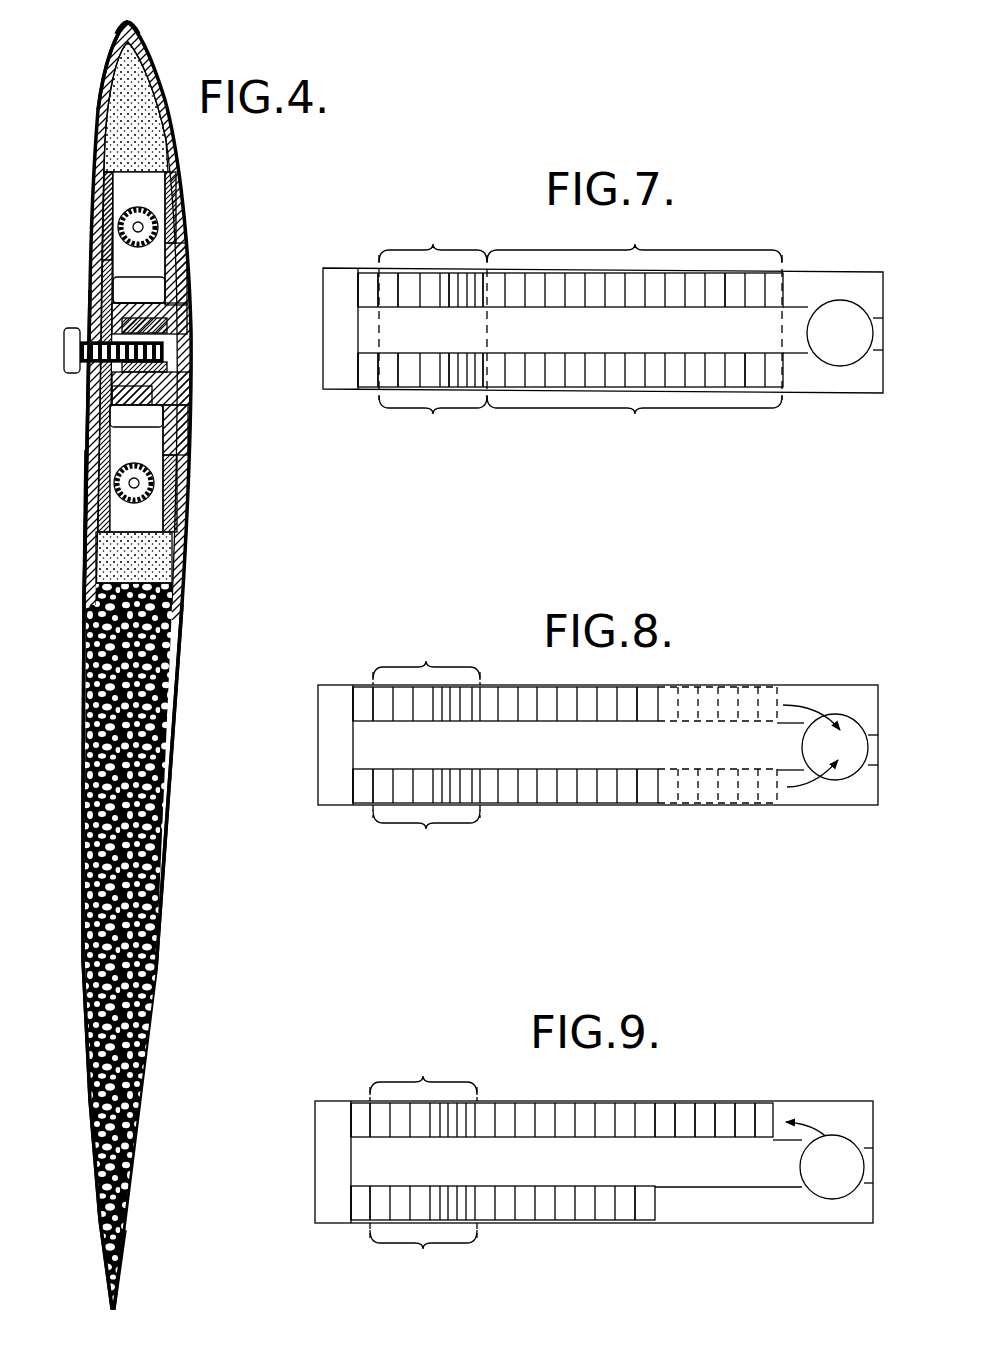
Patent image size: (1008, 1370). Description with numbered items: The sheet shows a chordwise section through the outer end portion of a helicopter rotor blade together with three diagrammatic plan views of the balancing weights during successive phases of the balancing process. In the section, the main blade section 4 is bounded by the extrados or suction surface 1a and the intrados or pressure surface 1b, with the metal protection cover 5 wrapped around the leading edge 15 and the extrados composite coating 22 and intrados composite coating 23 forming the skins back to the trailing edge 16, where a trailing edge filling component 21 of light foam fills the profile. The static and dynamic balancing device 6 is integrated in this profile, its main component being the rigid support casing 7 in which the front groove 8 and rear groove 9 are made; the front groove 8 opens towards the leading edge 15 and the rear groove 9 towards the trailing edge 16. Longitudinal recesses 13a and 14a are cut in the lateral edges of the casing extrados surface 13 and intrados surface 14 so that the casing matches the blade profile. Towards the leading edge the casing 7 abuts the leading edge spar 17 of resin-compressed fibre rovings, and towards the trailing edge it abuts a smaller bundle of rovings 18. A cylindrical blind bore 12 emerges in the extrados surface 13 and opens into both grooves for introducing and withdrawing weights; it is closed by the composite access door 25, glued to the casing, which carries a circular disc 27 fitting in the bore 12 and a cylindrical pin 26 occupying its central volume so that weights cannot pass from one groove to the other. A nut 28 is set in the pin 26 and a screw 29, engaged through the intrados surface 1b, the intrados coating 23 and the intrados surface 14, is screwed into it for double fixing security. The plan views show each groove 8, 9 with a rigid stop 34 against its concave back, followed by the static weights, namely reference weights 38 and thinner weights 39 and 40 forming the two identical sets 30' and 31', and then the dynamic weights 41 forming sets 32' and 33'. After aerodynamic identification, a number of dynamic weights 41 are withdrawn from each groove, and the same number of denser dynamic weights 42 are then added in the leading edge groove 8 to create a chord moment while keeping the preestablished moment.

In FIG. 4, the extrados or suction surface 1a is at (174, 770).
In FIG. 4, the intrados or pressure surface 1b is at (81, 888).
In FIG. 4, the main blade section 4 is at (158, 993).
In FIG. 4, the metal protection cover 5 is at (138, 35).
In FIG. 4, the static and dynamic balancing device 6 is at (192, 417).
In FIG. 4, the support casing 7 is at (95, 477).
In FIG. 7, the support casing 7 is at (348, 318).
In FIG. 8, the support casing 7 is at (340, 733).
In FIG. 9, the support casing 7 is at (332, 1127).
In FIG. 4, the front groove 8 is at (133, 185).
In FIG. 7, the front groove 8 is at (802, 293).
In FIG. 8, the front groove 8 is at (857, 710).
In FIG. 9, the front groove 8 is at (832, 1123).
In FIG. 4, the rear groove 9 is at (122, 517).
In FIG. 7, the rear groove 9 is at (840, 378).
In FIG. 8, the rear groove 9 is at (837, 785).
In FIG. 9, the rear groove 9 is at (808, 1210).
In FIG. 4, the cylindrical blind bore 12 is at (152, 292).
In FIG. 7, the cylindrical blind bore 12 is at (838, 320).
In FIG. 8, the cylindrical blind bore 12 is at (852, 745).
In FIG. 9, the cylindrical blind bore 12 is at (838, 1172).
In FIG. 4, the extrados surface of the casing 13 is at (175, 502).
In FIG. 4, the longitudinal recess 13a is at (177, 203).
In FIG. 4, the intrados surface of the casing 14 is at (108, 293).
In FIG. 4, the longitudinal recess 14a is at (108, 213).
In FIG. 4, the leading edge 15 is at (128, 40).
In FIG. 4, the trailing edge 16 is at (146, 1270).
In FIG. 4, the leading edge spar 17 is at (137, 113).
In FIG. 4, the bundle of reinforcement fibre rovings 18 is at (148, 555).
In FIG. 4, the trailing edge filling component 21 is at (93, 1100).
In FIG. 4, the extrados composite coating 22 is at (183, 595).
In FIG. 4, the intrados composite coating 23 is at (83, 663).
In FIG. 4, the access door 25 is at (172, 398).
In FIG. 4, the cylindrical pin 26 is at (137, 390).
In FIG. 4, the circular disc 27 is at (167, 447).
In FIG. 4, the nut 28 is at (163, 332).
In FIG. 4, the screw 29 is at (73, 360).
In FIG. 7, the set of static weights 30' is at (433, 305).
In FIG. 8, the set of static weights 30' is at (426, 655).
In FIG. 9, the set of static weights 30' is at (423, 1070).
In FIG. 7, the set of static weights 31' is at (433, 423).
In FIG. 8, the set of static weights 31' is at (426, 835).
In FIG. 9, the set of static weights 31' is at (423, 1257).
In FIG. 7, the set of dynamic weights 32' is at (634, 307).
In FIG. 7, the set of dynamic weights 33' is at (634, 426).
In FIG. 7, the rigid stop 34 is at (372, 292).
In FIG. 8, the rigid stop 34 is at (367, 698).
In FIG. 9, the rigid stop 34 is at (363, 1122).
In FIG. 7, the reference weights 38 is at (412, 282).
In FIG. 7, the static weight 39 is at (445, 292).
In FIG. 7, the static weight 40 is at (483, 293).
In FIG. 7, the dynamic weights 41 is at (715, 292).
In FIG. 8, the dynamic weights 41 is at (647, 708).
In FIG. 9, the dynamic weights 41 is at (647, 1120).
In FIG. 9, the dynamic weights 42 is at (765, 1128).